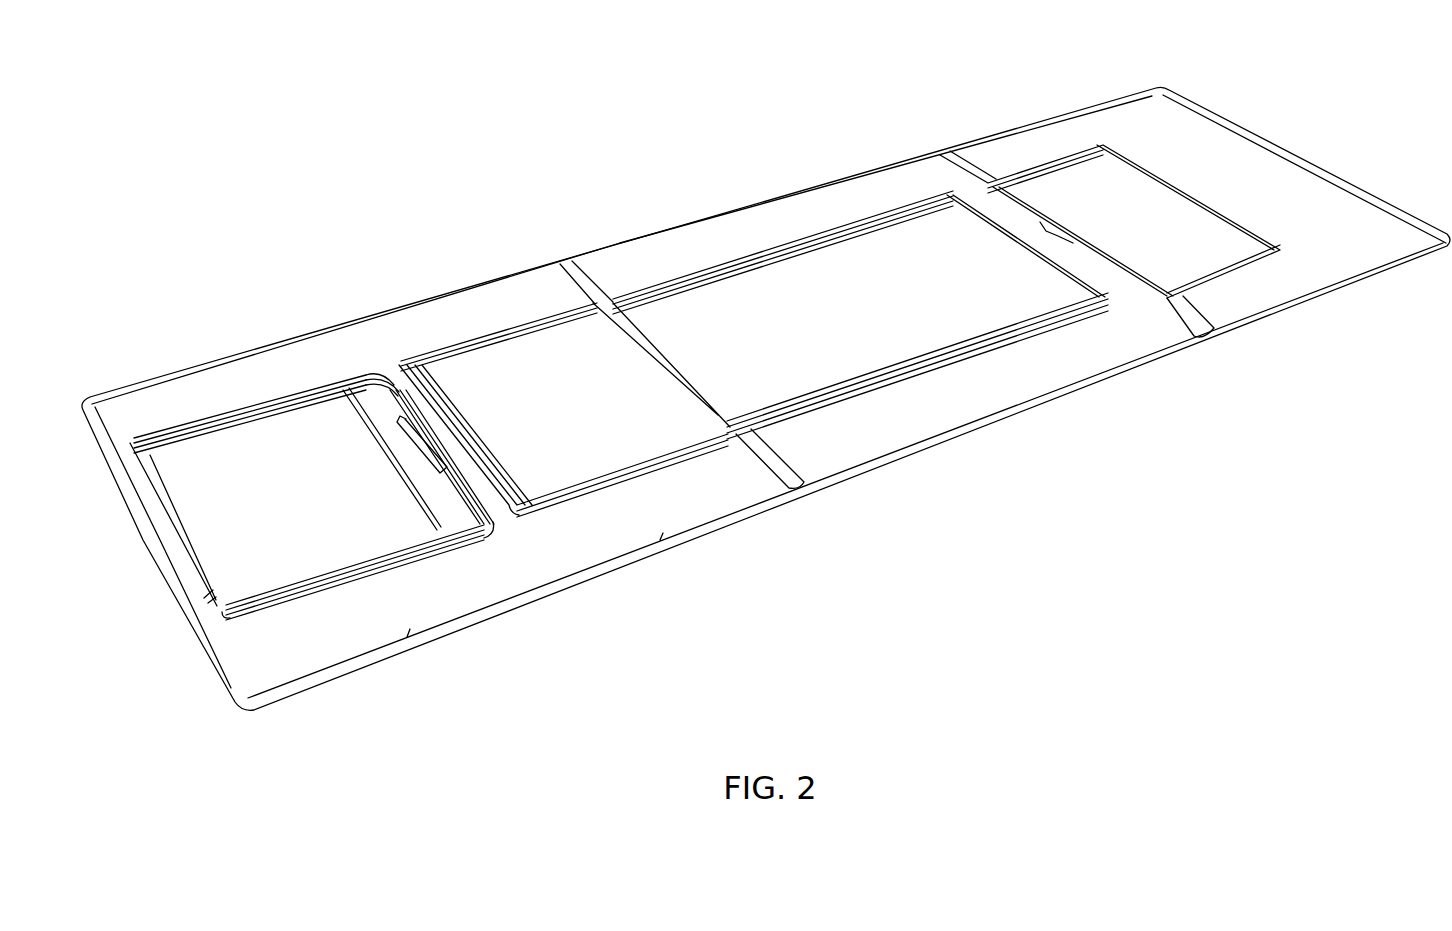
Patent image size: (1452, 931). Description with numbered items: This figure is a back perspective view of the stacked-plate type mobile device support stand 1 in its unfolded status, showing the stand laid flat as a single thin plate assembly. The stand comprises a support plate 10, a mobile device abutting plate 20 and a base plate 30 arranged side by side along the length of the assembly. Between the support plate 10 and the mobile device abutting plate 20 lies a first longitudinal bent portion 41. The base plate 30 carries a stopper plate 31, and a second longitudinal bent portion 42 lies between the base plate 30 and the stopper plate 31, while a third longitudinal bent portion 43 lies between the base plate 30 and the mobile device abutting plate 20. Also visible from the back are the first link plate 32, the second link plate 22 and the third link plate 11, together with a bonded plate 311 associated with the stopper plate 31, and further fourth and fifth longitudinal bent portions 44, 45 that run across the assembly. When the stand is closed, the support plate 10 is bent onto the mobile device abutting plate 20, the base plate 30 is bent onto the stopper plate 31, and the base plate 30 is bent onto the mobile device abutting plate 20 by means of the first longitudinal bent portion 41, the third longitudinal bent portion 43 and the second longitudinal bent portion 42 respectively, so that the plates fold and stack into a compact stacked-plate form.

The stacked-plate type mobile device support stand 1 is at (316, 80).
The support plate 10 is at (1238, 196).
The third link plate 11 is at (1097, 220).
The mobile device abutting plate 20 is at (865, 197).
The second link plate 22 is at (768, 275).
The base plate 30 is at (503, 291).
The stopper plate 31 is at (307, 552).
The bonded plate 311 is at (362, 393).
The first link plate 32 is at (488, 372).
The first longitudinal bent portion 41 is at (1190, 322).
The second longitudinal bent portion 42 is at (213, 587).
The third longitudinal bent portion 43 is at (765, 465).
The fourth longitudinal bent portion 44 is at (412, 495).
The fifth longitudinal bent portion 45 is at (718, 407).